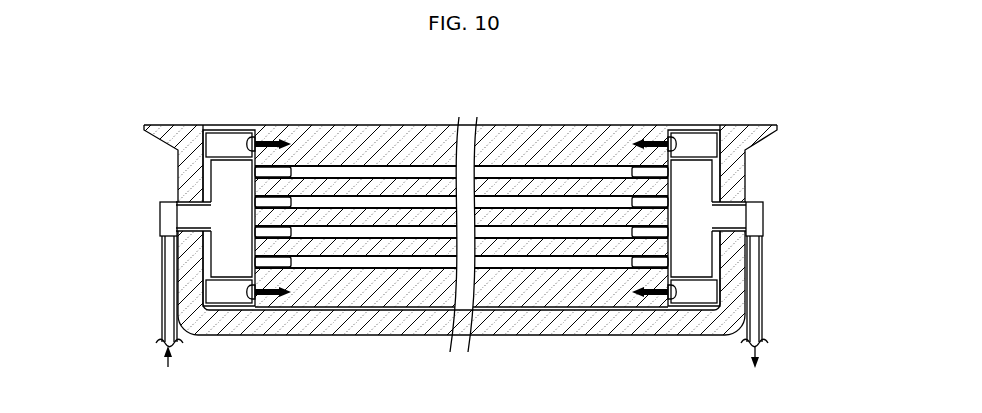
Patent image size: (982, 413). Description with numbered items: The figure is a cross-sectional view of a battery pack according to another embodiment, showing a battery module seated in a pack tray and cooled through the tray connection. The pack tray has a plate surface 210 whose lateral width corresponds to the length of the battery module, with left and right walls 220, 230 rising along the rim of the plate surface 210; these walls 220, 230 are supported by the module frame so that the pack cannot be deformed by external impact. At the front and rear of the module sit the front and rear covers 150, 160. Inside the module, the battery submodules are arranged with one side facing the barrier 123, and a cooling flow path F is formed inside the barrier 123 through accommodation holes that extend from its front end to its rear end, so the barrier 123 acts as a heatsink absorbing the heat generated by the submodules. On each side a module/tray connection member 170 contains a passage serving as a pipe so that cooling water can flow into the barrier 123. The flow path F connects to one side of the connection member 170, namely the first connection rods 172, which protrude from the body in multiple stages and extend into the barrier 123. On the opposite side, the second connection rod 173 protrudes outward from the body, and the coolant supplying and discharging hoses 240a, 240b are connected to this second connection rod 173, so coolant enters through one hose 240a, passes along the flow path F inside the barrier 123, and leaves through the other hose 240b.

The barrier 123 is at (420, 127).
The cooling flow path F is at (333, 178).
The front cover 150 is at (223, 129).
The rear cover 160 is at (692, 127).
The module/tray connection member 170 is at (248, 286).
The first connection rod 172 is at (285, 270).
The second connection rod 173 is at (185, 203).
The plate surface 210 is at (562, 328).
The left wall 220 is at (187, 266).
The right wall 230 is at (735, 268).
The coolant supplying hose 240a is at (160, 216).
The coolant discharging hose 240b is at (763, 216).